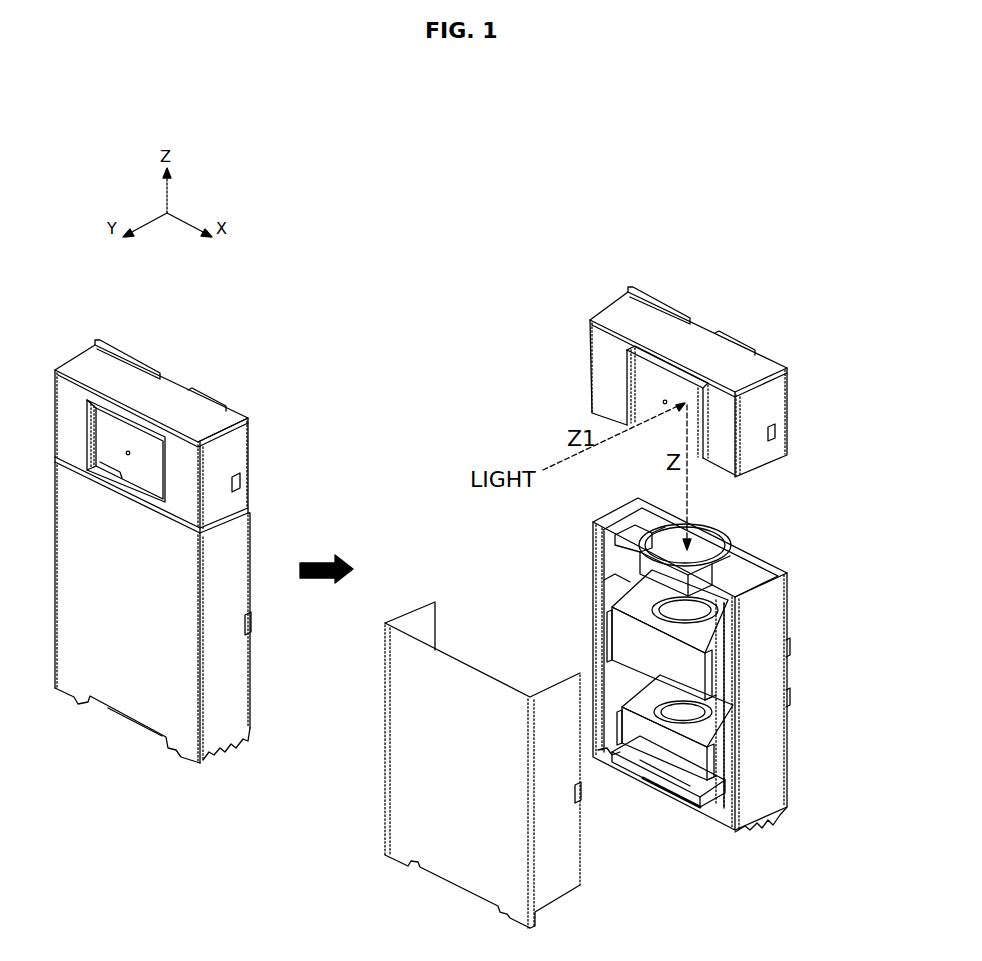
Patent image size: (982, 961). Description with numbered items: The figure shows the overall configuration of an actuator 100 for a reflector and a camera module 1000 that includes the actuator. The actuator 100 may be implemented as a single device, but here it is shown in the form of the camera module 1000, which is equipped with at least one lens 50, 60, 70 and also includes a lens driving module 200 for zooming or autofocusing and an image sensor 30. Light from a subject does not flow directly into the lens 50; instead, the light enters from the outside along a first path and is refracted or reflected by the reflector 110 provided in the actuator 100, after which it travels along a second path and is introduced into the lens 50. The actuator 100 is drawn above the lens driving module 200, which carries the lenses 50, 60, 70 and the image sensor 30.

The camera module 1000 is at (188, 357).
The actuator 100 is at (667, 371).
The reflector 110 is at (640, 383).
The lens driving module 200 is at (700, 661).
The lens 50 is at (607, 512).
The lens 60 is at (635, 608).
The lens 70 is at (618, 667).
The image sensor 30 is at (690, 778).